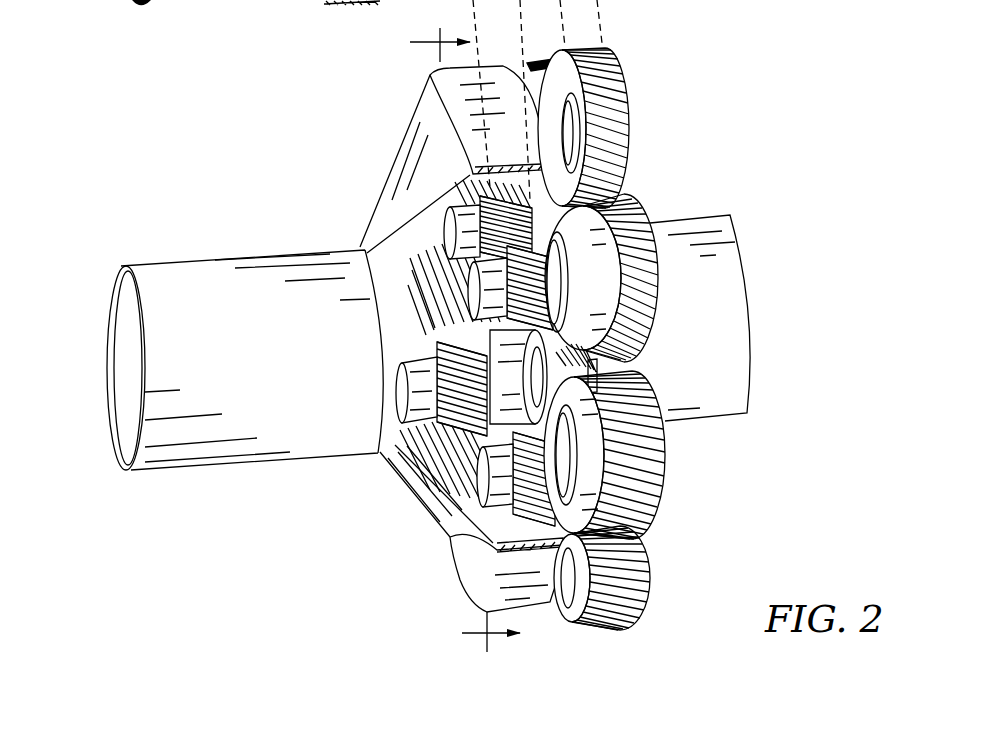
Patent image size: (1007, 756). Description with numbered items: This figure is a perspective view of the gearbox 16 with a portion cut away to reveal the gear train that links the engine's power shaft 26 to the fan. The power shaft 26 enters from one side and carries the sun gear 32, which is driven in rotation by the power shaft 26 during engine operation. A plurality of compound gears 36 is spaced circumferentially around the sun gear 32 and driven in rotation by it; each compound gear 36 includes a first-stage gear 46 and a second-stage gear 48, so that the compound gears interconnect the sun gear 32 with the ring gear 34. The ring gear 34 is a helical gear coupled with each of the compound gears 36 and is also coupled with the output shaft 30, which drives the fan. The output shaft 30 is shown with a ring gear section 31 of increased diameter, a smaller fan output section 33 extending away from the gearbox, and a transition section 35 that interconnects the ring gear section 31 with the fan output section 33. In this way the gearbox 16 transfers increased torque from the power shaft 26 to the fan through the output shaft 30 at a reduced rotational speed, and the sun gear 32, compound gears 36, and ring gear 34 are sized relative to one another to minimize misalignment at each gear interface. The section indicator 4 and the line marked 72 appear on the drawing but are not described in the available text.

The gearbox 16 is at (210, 118).
The output shaft 30 is at (128, 239).
The fan output section 33 is at (258, 277).
The transition section 35 is at (388, 190).
The ring gear section 31 is at (474, 122).
The ring gear 34 is at (453, 547).
The section line 72 is at (568, 100).
The section view indicator 4 is at (455, 340).
The second-stage gear 48 is at (500, 467).
The compound gears 36 is at (625, 104).
The power shaft 26 is at (720, 270).
The sun gear 32 is at (604, 368).
The first-stage gear 46 is at (655, 571).